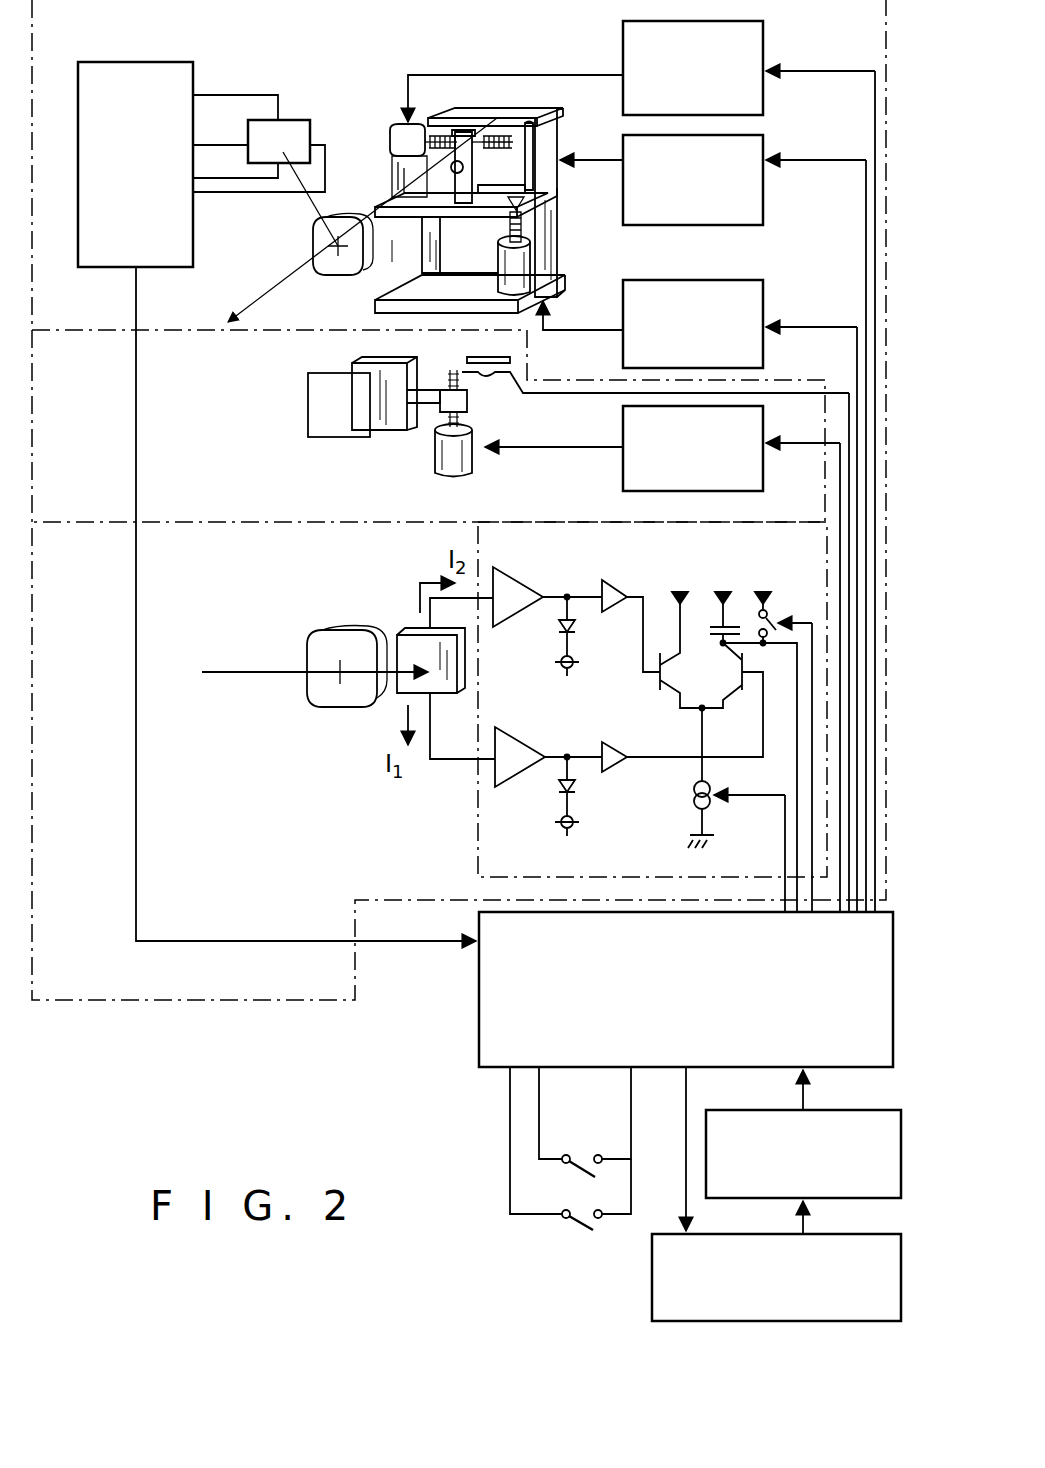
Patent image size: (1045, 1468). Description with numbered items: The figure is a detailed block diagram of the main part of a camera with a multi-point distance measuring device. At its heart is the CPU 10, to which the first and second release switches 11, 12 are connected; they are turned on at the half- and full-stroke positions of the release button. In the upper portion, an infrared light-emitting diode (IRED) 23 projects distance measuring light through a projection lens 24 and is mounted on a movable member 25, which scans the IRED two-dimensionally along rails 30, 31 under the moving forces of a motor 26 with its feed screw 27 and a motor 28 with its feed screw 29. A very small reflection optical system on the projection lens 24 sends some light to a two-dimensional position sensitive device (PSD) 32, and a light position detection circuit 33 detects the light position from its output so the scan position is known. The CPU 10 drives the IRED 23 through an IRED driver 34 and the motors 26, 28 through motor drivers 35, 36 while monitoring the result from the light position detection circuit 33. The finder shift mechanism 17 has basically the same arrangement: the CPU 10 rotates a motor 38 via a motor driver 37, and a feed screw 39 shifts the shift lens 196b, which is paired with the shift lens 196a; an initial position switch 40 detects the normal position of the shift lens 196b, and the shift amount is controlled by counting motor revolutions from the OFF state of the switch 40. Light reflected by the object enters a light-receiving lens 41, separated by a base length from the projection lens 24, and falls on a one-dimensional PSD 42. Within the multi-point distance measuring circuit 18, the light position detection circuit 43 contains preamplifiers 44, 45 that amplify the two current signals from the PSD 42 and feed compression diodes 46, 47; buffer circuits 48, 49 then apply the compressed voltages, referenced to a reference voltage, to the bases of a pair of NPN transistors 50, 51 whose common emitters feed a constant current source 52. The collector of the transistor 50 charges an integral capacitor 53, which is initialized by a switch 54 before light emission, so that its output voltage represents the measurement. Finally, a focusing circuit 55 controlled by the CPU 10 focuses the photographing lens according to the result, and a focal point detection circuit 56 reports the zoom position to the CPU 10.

The CPU 10 is at (479, 1036).
The first release switch 11 is at (570, 1226).
The second release switch 12 is at (582, 1158).
The finder shift mechanism 17 is at (528, 418).
The multi-point distance measuring circuit 18 is at (338, 1003).
The infrared light-emitting diode (IRED) 23 is at (497, 138).
The projection lens 24 is at (341, 262).
The movable member 25 is at (463, 132).
The motor 26 is at (390, 144).
The feed screw 27 is at (440, 138).
The motor 28 is at (535, 268).
The feed screw 29 is at (530, 235).
The rail 30 is at (525, 205).
The rail 31 is at (548, 115).
The two-dimensional optical position sensitive device (PSD) 32 is at (300, 118).
The light position detection circuit 33 is at (193, 78).
The IRED driver 34 is at (763, 148).
The motor driver 35 is at (763, 50).
The motor driver 36 is at (763, 302).
The motor driver 37 is at (763, 420).
The motor 38 is at (472, 465).
The feed screw 39 is at (470, 410).
The initial position switch 40 is at (515, 378).
The light-receiving lens 41 is at (338, 636).
The optical position sensitive device (PSD) 42 is at (413, 636).
The light position detection circuit 43 is at (478, 814).
The preamplifier 44 is at (518, 730).
The preamplifier 45 is at (514, 582).
The compression diode 46 is at (560, 788).
The compression diode 47 is at (558, 630).
The buffer circuit 48 is at (616, 752).
The buffer circuit 49 is at (616, 582).
The NPN transistor 50 is at (735, 692).
The NPN transistor 51 is at (664, 650).
The constant current source 52 is at (694, 795).
The integral capacitor 53 is at (722, 628).
The switch 54 is at (770, 608).
The focusing circuit 55 is at (652, 1263).
The focal point (f) detection circuit 56 is at (718, 1110).
The shift lens 196a is at (333, 425).
The shift lens 196b is at (356, 363).